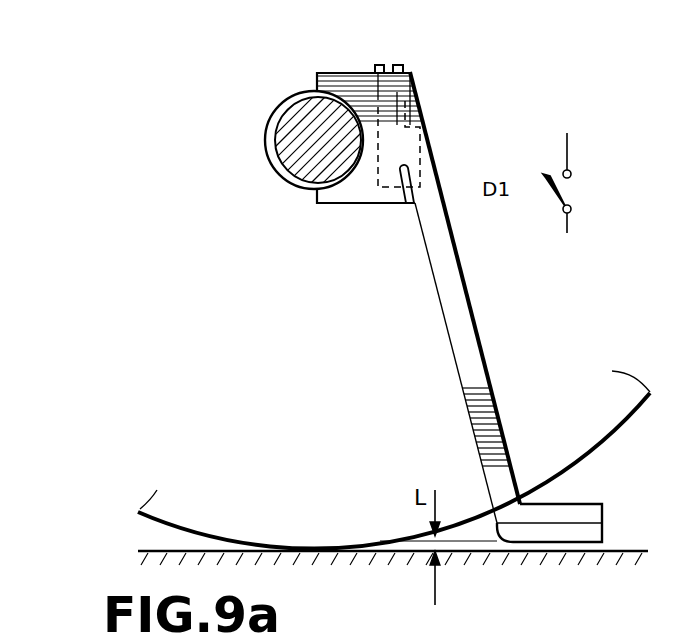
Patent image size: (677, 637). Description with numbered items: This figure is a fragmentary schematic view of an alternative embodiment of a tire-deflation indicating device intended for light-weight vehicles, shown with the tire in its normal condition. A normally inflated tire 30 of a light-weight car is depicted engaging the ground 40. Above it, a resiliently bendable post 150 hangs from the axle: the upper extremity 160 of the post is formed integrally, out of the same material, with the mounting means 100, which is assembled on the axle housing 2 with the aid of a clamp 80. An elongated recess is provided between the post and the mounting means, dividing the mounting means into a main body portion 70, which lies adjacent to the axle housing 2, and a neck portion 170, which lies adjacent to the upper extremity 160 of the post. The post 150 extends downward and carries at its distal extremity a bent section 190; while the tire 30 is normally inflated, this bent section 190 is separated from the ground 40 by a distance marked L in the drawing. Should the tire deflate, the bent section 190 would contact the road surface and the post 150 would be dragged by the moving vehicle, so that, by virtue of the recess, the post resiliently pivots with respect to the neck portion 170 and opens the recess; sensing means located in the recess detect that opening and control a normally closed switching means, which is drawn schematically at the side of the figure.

The axle housing 2 is at (297, 158).
The normally inflated tire 30 is at (205, 533).
The ground 40 is at (513, 553).
The main body portion 70 is at (363, 185).
The clamp 80 is at (295, 96).
The mounting means 100 is at (344, 92).
The resiliently bendable post 150 is at (455, 305).
The upper extremity 160 is at (408, 92).
The neck portion 170 is at (393, 150).
The bent section 190 is at (602, 505).